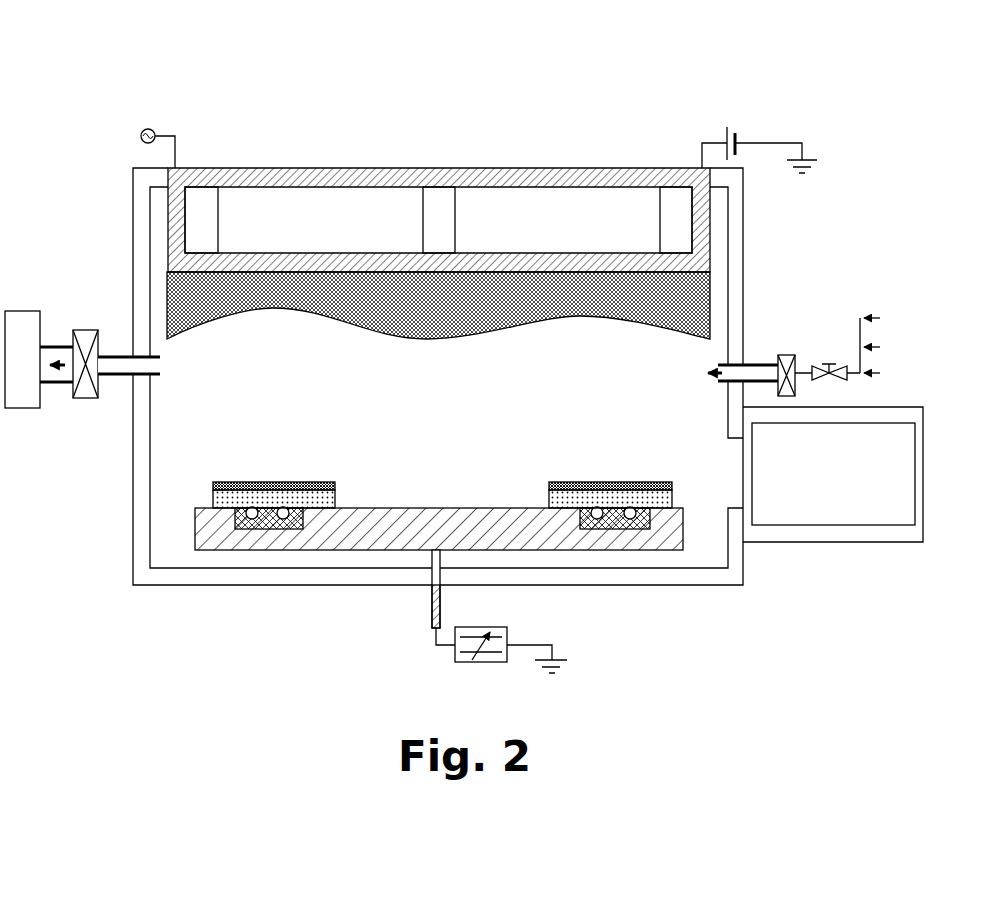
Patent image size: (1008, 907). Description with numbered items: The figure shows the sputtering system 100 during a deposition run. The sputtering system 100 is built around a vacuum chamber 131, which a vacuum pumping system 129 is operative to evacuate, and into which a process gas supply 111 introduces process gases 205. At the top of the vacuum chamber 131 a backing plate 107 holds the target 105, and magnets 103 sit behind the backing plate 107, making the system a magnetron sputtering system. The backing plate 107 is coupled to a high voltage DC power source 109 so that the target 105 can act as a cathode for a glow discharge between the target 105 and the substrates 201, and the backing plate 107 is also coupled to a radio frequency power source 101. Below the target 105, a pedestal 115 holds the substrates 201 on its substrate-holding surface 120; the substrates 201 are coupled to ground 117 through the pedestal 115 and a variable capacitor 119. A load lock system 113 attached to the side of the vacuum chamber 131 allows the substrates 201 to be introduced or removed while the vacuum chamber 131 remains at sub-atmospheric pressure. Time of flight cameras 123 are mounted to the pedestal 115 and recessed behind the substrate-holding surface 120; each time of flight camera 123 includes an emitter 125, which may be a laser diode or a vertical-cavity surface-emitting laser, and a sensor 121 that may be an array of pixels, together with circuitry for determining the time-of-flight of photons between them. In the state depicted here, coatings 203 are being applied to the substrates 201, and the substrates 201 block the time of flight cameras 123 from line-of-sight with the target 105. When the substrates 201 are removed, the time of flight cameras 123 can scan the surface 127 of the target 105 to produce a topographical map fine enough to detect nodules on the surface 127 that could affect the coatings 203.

The sputtering system 100 is at (122, 62).
The radio frequency (RF) power source 101 is at (152, 132).
The magnets 103 is at (208, 222).
The target 105 is at (297, 293).
The backing plate 107 is at (495, 263).
The high voltage DC power source 109 is at (737, 142).
The process gas supply 111 is at (870, 281).
The load lock system 113 is at (810, 532).
The pedestal 115 is at (677, 527).
The ground 117 is at (557, 660).
The variable capacitor 119 is at (497, 638).
The substrate-holding surface 120 is at (319, 514).
The sensor 121 is at (278, 527).
The time of flight (TOF) camera 123 is at (265, 527).
The emitter 125 is at (248, 518).
The surface of target 127 is at (266, 316).
The vacuum pumping system 129 is at (27, 337).
The vacuum chamber 131 is at (138, 220).
The substrates 201 is at (617, 498).
The coatings 203 is at (653, 488).
The process gases 205 is at (723, 362).